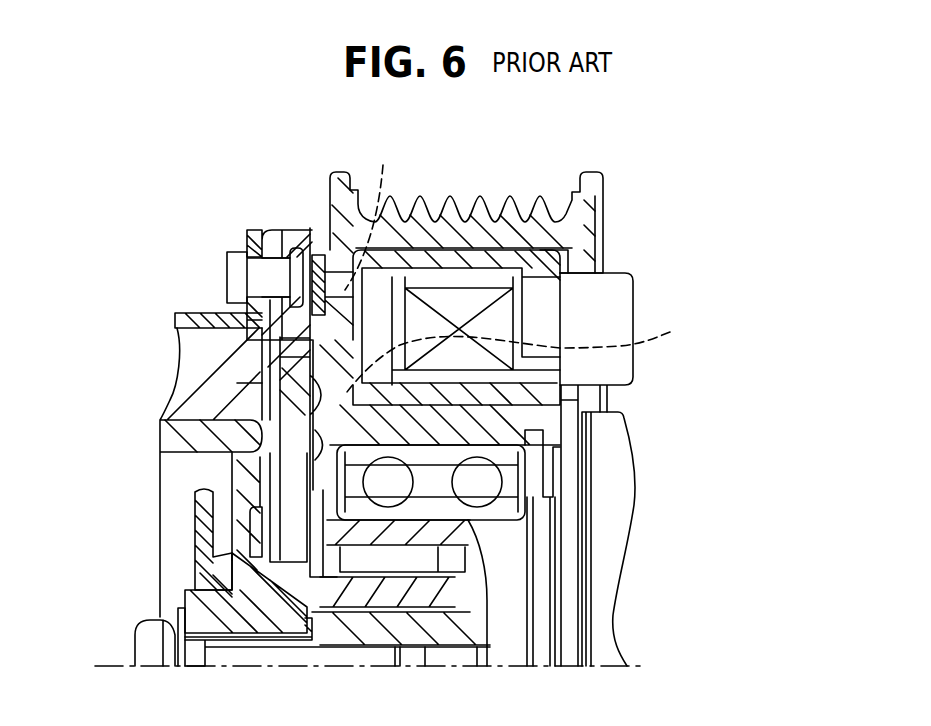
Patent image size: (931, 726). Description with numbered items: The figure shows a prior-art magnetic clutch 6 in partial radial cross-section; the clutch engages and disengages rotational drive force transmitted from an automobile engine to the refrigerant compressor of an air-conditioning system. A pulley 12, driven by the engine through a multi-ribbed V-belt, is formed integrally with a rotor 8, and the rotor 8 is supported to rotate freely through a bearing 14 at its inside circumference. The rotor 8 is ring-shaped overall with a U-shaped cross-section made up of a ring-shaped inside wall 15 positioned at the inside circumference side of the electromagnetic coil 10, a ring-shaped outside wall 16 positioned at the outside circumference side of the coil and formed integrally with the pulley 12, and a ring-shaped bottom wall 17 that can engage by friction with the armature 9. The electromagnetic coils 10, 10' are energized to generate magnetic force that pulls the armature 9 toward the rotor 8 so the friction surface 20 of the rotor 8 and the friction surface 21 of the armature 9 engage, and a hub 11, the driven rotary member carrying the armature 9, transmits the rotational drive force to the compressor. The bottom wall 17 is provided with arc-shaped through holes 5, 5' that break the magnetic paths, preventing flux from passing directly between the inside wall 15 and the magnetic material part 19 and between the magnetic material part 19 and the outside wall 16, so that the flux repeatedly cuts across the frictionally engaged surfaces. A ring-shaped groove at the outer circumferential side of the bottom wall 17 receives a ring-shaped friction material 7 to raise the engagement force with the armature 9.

The arc-shaped through hole 5 is at (368, 214).
The arc-shaped through hole 5' is at (521, 350).
The magnetic clutch 6 is at (632, 197).
The friction material 7 is at (312, 275).
The rotor 8 is at (327, 443).
The armature 9 is at (287, 233).
The electromagnetic coil 10 is at (604, 441).
The electromagnetic coil 10' is at (476, 263).
The hub 11 is at (193, 363).
The pulley 12 is at (452, 195).
The bearing 14 is at (504, 512).
The inside wall 15 is at (560, 422).
The outside wall 16 is at (527, 233).
The bottom wall 17 is at (328, 222).
The magnetic material part 19 is at (262, 327).
The friction surface of the rotor 20 is at (313, 420).
The friction surface of the armature 21 is at (260, 372).